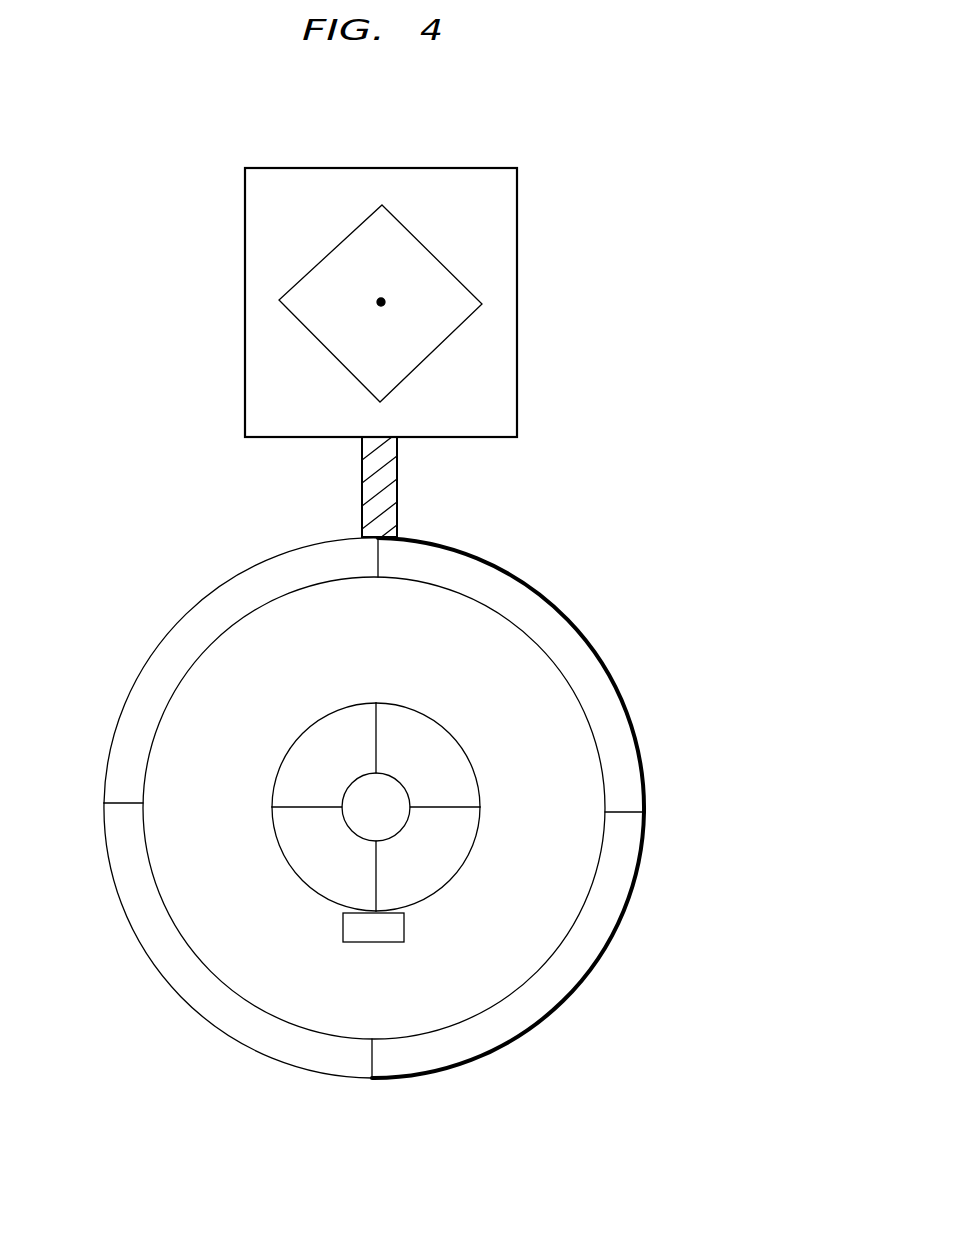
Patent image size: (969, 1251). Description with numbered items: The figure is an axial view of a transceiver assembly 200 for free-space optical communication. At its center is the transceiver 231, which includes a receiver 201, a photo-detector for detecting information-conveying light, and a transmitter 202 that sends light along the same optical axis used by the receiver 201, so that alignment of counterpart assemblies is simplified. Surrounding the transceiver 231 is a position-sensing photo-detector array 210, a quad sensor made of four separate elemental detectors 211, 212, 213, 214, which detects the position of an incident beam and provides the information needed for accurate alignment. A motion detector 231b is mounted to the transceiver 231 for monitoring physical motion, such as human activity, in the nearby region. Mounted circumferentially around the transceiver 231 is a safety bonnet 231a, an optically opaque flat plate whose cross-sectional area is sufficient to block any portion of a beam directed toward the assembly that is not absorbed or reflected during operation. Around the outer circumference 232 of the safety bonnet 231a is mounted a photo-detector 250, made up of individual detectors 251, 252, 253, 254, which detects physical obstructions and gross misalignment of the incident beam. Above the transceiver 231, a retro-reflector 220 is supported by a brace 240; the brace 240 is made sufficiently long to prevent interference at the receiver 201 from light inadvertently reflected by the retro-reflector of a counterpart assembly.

The transceiver assembly 200 is at (715, 578).
The receiver 201 is at (340, 800).
The transmitter 202 is at (287, 795).
The position-sensing photo-detector array 210 is at (363, 779).
The elemental detector 211 is at (430, 743).
The elemental detector 212 is at (443, 862).
The elemental detector 213 is at (315, 877).
The elemental detector 214 is at (312, 743).
The retro-reflector 220 is at (518, 303).
The transceiver 231 is at (395, 821).
The safety bonnet 231a is at (569, 806).
The motion detector 231b is at (372, 942).
The outer circumference 232 is at (462, 593).
The brace 240 is at (398, 487).
The photo-detector 250 is at (400, 808).
The individual detector 251 is at (552, 625).
The individual detector 252 is at (575, 962).
The individual detector 253 is at (155, 937).
The individual detector 254 is at (185, 640).